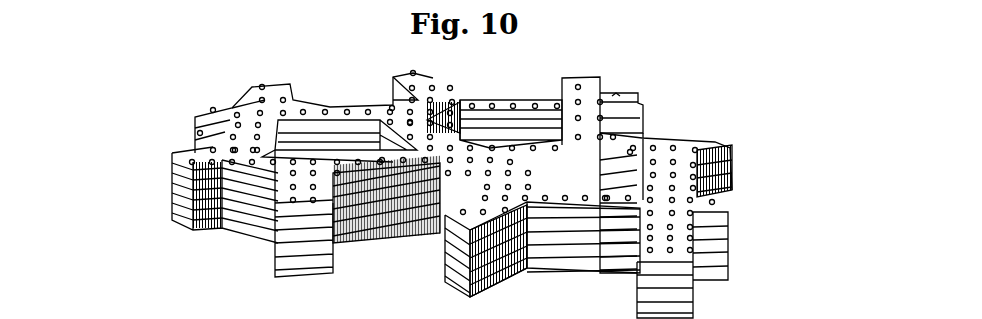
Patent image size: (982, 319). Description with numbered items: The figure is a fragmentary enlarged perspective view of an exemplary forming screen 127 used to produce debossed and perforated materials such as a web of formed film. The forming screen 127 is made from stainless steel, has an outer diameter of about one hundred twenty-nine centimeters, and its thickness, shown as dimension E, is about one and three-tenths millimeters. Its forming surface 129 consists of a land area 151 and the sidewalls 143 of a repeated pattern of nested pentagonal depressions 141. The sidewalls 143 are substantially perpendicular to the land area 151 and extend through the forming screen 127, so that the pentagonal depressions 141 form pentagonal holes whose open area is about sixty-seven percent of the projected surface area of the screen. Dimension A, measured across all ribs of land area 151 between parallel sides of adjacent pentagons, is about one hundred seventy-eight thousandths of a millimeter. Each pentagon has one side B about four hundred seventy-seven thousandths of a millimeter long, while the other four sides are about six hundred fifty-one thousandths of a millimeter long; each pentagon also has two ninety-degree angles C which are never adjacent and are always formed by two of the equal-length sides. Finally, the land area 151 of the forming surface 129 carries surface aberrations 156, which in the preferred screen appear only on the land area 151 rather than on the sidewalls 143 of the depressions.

The forming screen 127 is at (733, 140).
The forming surface 129 is at (660, 157).
The pentagonal depressions 141 is at (362, 130).
The sidewalls 143 is at (562, 253).
The land area 151 is at (588, 83).
The surface aberrations 156 is at (262, 100).
The dimension A is at (300, 63).
The side B is at (442, 103).
The angles C is at (345, 133).
The dimension E is at (110, 162).